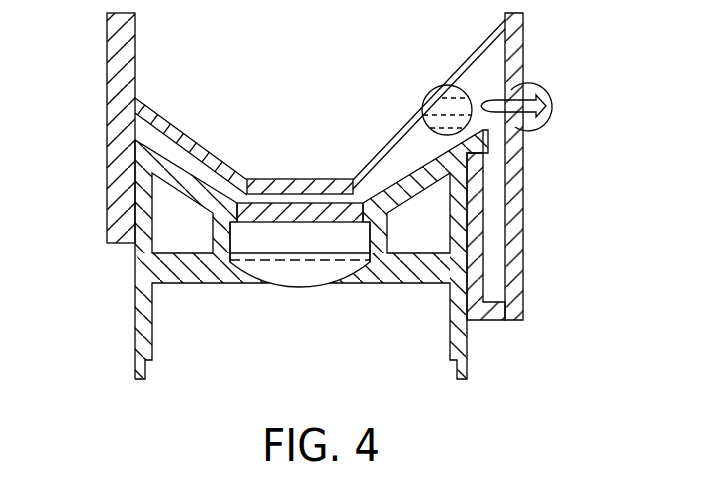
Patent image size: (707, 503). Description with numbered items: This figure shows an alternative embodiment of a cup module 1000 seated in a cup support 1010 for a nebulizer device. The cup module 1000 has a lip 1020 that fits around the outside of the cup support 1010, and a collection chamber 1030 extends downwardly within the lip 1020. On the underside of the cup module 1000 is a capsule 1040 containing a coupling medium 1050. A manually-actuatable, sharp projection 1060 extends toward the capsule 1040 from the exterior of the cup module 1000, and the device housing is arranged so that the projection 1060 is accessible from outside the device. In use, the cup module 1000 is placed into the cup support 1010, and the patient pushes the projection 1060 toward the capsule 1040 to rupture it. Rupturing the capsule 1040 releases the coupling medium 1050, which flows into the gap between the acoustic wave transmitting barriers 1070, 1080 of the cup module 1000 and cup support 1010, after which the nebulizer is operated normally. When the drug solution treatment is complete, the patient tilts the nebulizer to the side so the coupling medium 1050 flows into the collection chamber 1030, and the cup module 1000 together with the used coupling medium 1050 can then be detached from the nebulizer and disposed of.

The cup module 1000 is at (107, 130).
The cup support 1010 is at (134, 281).
The lip 1020 is at (130, 244).
The collection chamber 1030 is at (522, 278).
The capsule 1040 is at (523, 60).
The coupling medium 1050 is at (446, 116).
The sharp projection 1060 is at (548, 104).
The acoustic wave transmitting barrier 1070 is at (283, 179).
The acoustic wave transmitting barrier 1080 is at (290, 222).